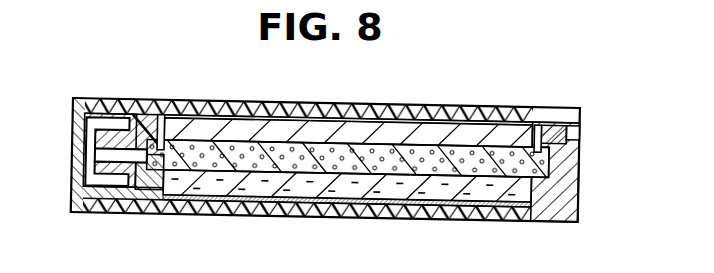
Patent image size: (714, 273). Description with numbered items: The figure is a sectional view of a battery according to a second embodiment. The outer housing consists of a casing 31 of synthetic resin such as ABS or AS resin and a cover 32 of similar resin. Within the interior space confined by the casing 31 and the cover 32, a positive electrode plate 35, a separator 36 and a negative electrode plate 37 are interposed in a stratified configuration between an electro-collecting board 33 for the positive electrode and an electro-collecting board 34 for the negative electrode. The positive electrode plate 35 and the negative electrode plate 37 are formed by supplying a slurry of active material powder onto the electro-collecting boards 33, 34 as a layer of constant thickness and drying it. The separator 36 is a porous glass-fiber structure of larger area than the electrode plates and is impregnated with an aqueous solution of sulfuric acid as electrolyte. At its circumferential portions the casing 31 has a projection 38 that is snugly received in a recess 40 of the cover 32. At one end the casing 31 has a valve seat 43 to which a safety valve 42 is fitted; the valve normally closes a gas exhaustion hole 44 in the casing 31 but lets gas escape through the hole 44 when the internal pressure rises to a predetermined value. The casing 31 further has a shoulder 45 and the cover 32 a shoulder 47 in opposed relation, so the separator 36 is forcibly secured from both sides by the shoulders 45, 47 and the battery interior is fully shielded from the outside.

The casing 31 is at (380, 207).
The cover 32 is at (390, 104).
The electro-collecting board for positive electrode 33 is at (320, 116).
The electro-collecting board for negative electrode 34 is at (320, 200).
The positive electrode plate 35 is at (222, 124).
The separator 36 is at (217, 164).
The negative electrode plate 37 is at (263, 184).
The projection 38 is at (142, 128).
The recess 40 is at (157, 127).
The safety valve 42 is at (75, 153).
The valve seat 43 is at (103, 165).
The gas exhaustion hole 44 is at (128, 158).
The shoulder 45 is at (544, 182).
The shoulder 47 is at (160, 140).